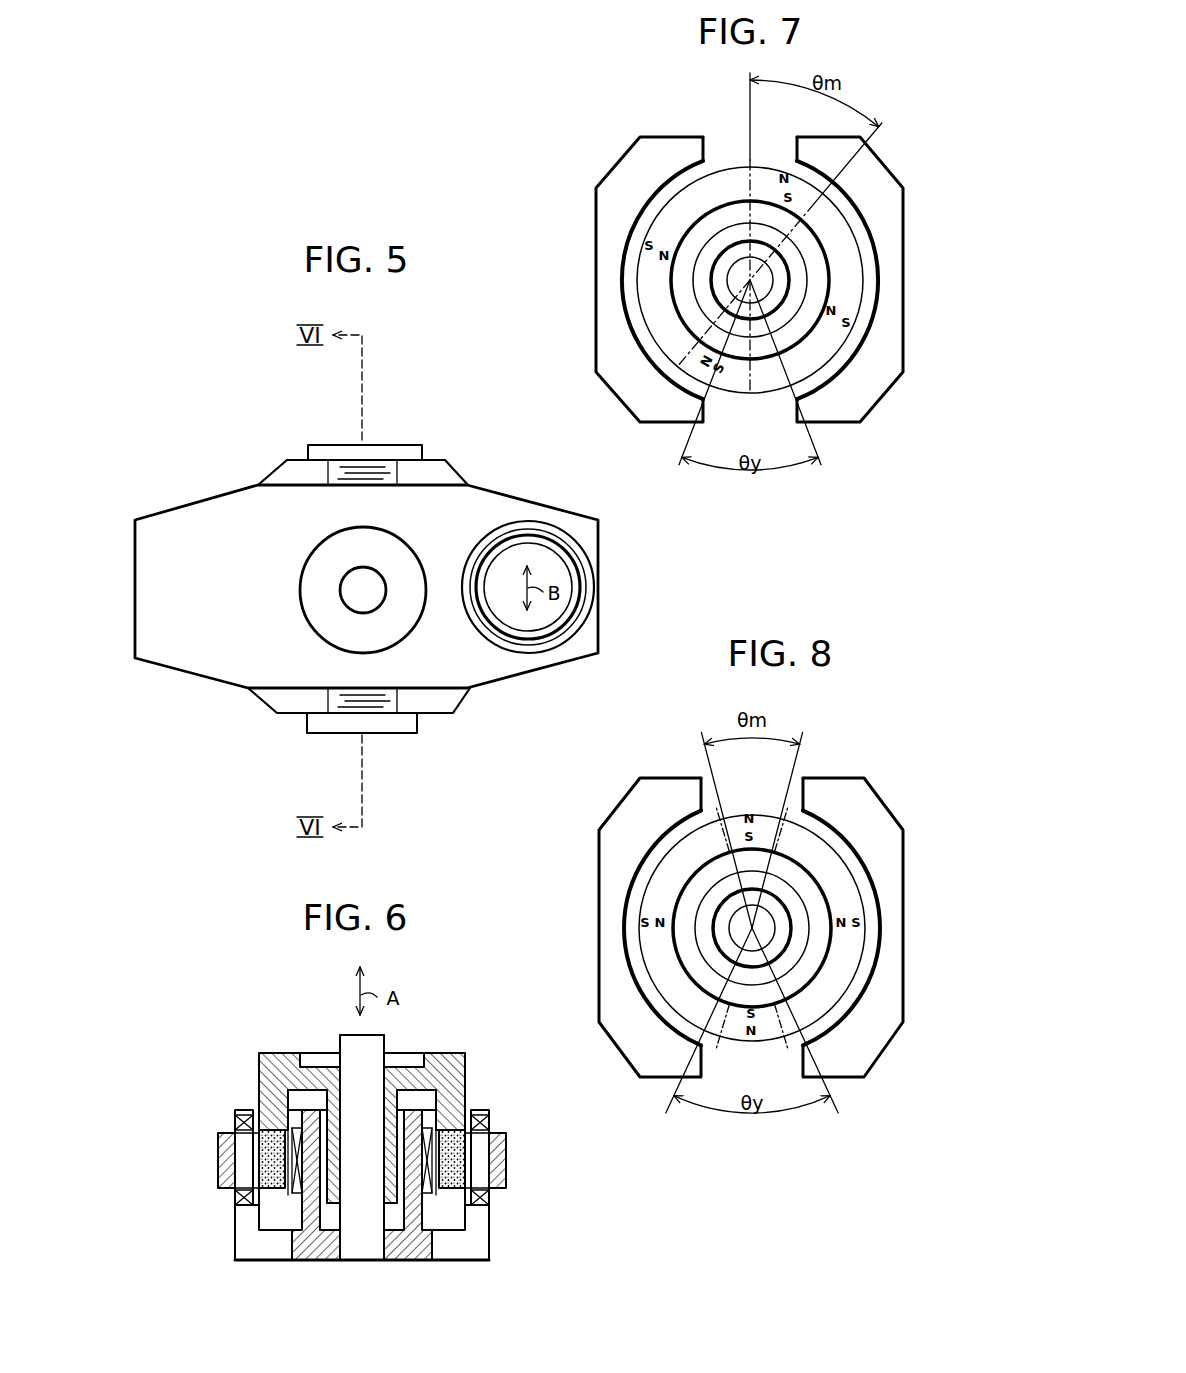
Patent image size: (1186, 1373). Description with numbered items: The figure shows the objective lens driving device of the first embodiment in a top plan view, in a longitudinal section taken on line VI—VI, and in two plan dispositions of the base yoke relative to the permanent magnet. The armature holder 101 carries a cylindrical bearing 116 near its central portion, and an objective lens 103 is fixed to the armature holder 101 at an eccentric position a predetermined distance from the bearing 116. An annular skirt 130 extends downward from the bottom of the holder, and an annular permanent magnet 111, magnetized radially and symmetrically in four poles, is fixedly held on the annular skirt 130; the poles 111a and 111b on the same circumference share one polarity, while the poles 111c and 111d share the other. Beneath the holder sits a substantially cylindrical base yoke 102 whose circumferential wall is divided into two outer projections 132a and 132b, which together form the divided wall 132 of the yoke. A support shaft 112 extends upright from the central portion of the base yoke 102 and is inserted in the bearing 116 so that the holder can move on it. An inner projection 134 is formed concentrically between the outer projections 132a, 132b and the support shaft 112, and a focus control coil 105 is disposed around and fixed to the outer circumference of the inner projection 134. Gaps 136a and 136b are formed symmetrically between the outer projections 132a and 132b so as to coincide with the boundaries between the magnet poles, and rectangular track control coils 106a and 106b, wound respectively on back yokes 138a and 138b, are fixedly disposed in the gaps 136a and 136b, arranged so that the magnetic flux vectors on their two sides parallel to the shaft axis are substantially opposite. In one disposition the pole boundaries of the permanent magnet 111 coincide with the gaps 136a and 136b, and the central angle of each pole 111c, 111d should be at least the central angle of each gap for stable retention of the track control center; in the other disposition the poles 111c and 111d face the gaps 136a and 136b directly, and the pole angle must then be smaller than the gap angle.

In FIG. 5, the armature holder 101 is at (548, 657).
In FIG. 6, the armature holder 101 is at (448, 1052).
In FIG. 6, the base yoke 102 is at (413, 1247).
In FIG. 7, the base yoke 102 is at (746, 279).
In FIG. 8, the base yoke 102 is at (748, 931).
In FIG. 5, the objective lens 103 is at (540, 558).
In FIG. 6, the focus control coil 105 is at (298, 1240).
In FIG. 5, the track control coil 106a is at (340, 468).
In FIG. 6, the track control coil 106a is at (487, 1127).
In FIG. 5, the track control coil 106b is at (377, 712).
In FIG. 6, the track control coil 106b is at (237, 1123).
In FIG. 6, the annular permanent magnet 111 is at (270, 1190).
In FIG. 7, the annular permanent magnet 111 is at (851, 287).
In FIG. 8, the annular permanent magnet 111 is at (845, 960).
In FIG. 7, the pole 111a is at (637, 290).
In FIG. 8, the pole 111a is at (635, 940).
In FIG. 7, the pole 111b is at (853, 347).
In FIG. 8, the pole 111b is at (848, 985).
In FIG. 7, the pole 111c is at (760, 160).
In FIG. 8, the pole 111c is at (757, 810).
In FIG. 7, the pole 111d is at (737, 395).
In FIG. 8, the pole 111d is at (733, 1037).
In FIG. 6, the support shaft 112 is at (363, 1247).
In FIG. 7, the support shaft 112 is at (737, 267).
In FIG. 8, the support shaft 112 is at (740, 917).
In FIG. 5, the bearing 116 is at (358, 585).
In FIG. 6, the bearing 116 is at (450, 1117).
In FIG. 6, the annular skirt 130 is at (393, 1105).
In FIG. 6, the housing 132 is at (247, 1110).
In FIG. 5, the outer projection 132a is at (300, 702).
In FIG. 7, the outer projection 132a is at (613, 370).
In FIG. 8, the outer projection 132a is at (607, 907).
In FIG. 5, the outer projection 132b is at (443, 697).
In FIG. 7, the outer projection 132b is at (880, 217).
In FIG. 8, the outer projection 132b is at (887, 908).
In FIG. 6, the inner projection 134 is at (310, 1107).
In FIG. 7, the inner projection 134 is at (797, 267).
In FIG. 8, the inner projection 134 is at (793, 907).
In FIG. 6, the gap 136a is at (477, 1230).
In FIG. 7, the gap 136a is at (707, 148).
In FIG. 8, the gap 136a is at (700, 785).
In FIG. 6, the gap 136b is at (245, 1227).
In FIG. 7, the gap 136b is at (785, 420).
In FIG. 8, the gap 136b is at (792, 1073).
In FIG. 5, the back yoke 138a is at (351, 450).
In FIG. 6, the back yoke 138a is at (505, 1168).
In FIG. 5, the back yoke 138b is at (350, 735).
In FIG. 6, the back yoke 138b is at (218, 1163).